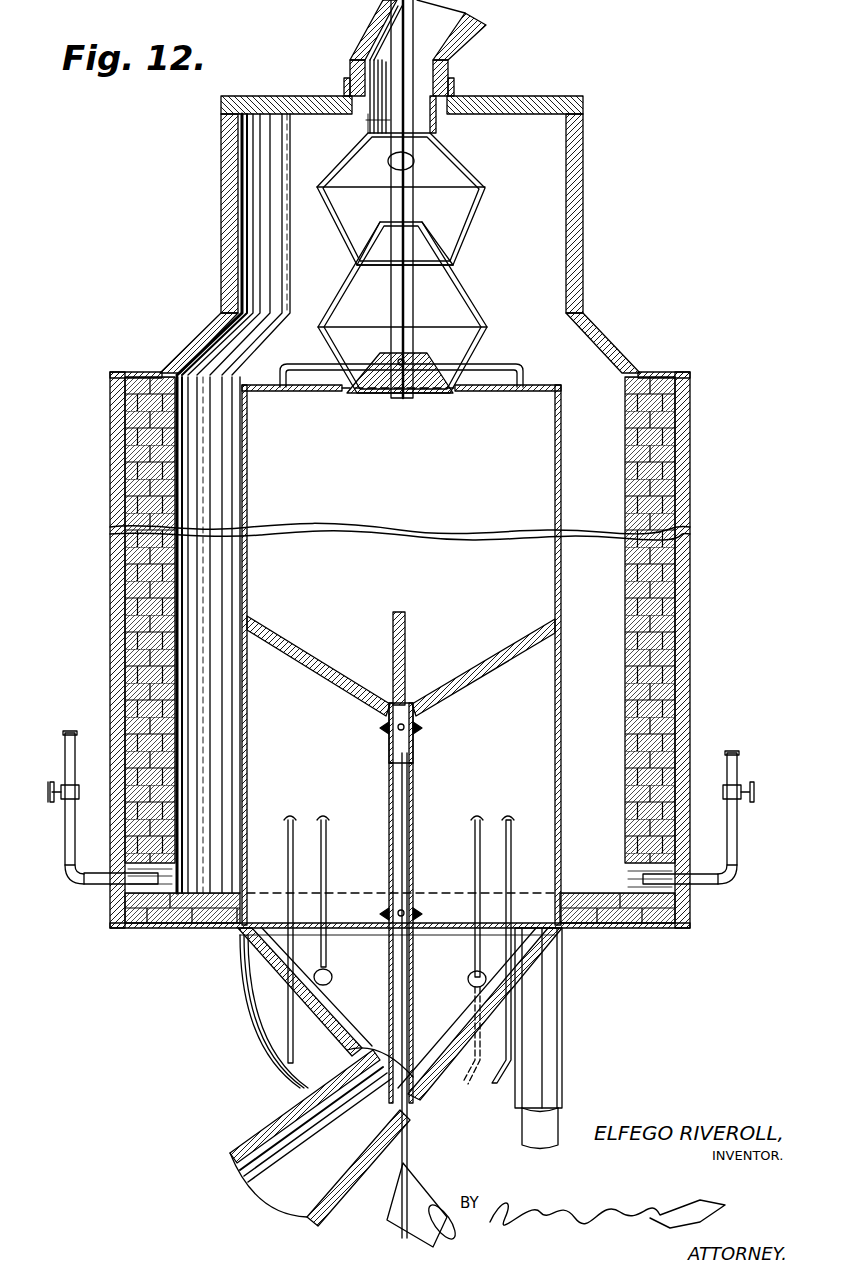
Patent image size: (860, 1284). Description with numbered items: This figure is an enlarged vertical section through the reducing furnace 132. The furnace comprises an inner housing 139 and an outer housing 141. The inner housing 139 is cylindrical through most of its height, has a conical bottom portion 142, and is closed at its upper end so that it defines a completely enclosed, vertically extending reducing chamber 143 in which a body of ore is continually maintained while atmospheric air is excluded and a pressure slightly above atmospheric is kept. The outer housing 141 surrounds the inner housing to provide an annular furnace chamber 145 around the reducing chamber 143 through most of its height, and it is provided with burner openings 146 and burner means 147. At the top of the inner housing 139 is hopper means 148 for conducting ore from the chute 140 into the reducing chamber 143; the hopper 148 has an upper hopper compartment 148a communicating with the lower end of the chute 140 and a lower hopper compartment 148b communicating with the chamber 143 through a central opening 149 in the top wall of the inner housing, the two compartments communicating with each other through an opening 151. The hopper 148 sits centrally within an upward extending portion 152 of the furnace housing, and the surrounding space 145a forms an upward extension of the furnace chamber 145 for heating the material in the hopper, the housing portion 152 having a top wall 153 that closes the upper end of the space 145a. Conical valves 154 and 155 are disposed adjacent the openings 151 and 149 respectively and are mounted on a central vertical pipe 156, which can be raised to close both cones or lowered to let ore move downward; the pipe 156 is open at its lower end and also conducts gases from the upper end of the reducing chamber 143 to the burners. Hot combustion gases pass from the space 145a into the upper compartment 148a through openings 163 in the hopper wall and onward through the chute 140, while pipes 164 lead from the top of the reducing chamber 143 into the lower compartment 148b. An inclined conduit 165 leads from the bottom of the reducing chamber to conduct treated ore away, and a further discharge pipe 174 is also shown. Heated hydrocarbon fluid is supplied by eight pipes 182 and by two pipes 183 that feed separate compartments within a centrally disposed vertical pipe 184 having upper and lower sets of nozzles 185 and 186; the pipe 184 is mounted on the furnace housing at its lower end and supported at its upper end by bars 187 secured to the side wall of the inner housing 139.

The reducing furnace 132 is at (106, 478).
The inner housing 139 is at (555, 488).
The chute 140 is at (468, 22).
The outer housing 141 is at (692, 476).
The conical bottom portion 142 is at (262, 968).
The reducing chamber 143 is at (401, 575).
The annular furnace chamber 145 is at (597, 628).
The surrounding space 145a is at (285, 181).
The burner openings 146 is at (115, 867).
The burner means 147 is at (107, 882).
The hopper means 148 is at (462, 253).
The upper hopper compartment 148a is at (478, 206).
The lower hopper compartment 148b is at (482, 304).
The central opening 149 is at (441, 398).
The opening 151 is at (356, 241).
The upward extending portion 152 is at (567, 192).
The top wall 153 is at (522, 108).
The conical valve 154 is at (446, 214).
The conical valve 155 is at (434, 352).
The vertical pipe 156 is at (397, 147).
The openings 163 is at (456, 159).
The pipes 164 is at (512, 366).
The inclined conduit 165 is at (275, 1115).
The outlet pipe 174 is at (247, 1048).
The pipes 182 is at (327, 858).
The pipes 183 is at (407, 1143).
The vertical pipe 184 is at (415, 791).
The upper nozzles 185 is at (420, 726).
The lower nozzles 186 is at (423, 913).
The bars 187 is at (476, 668).